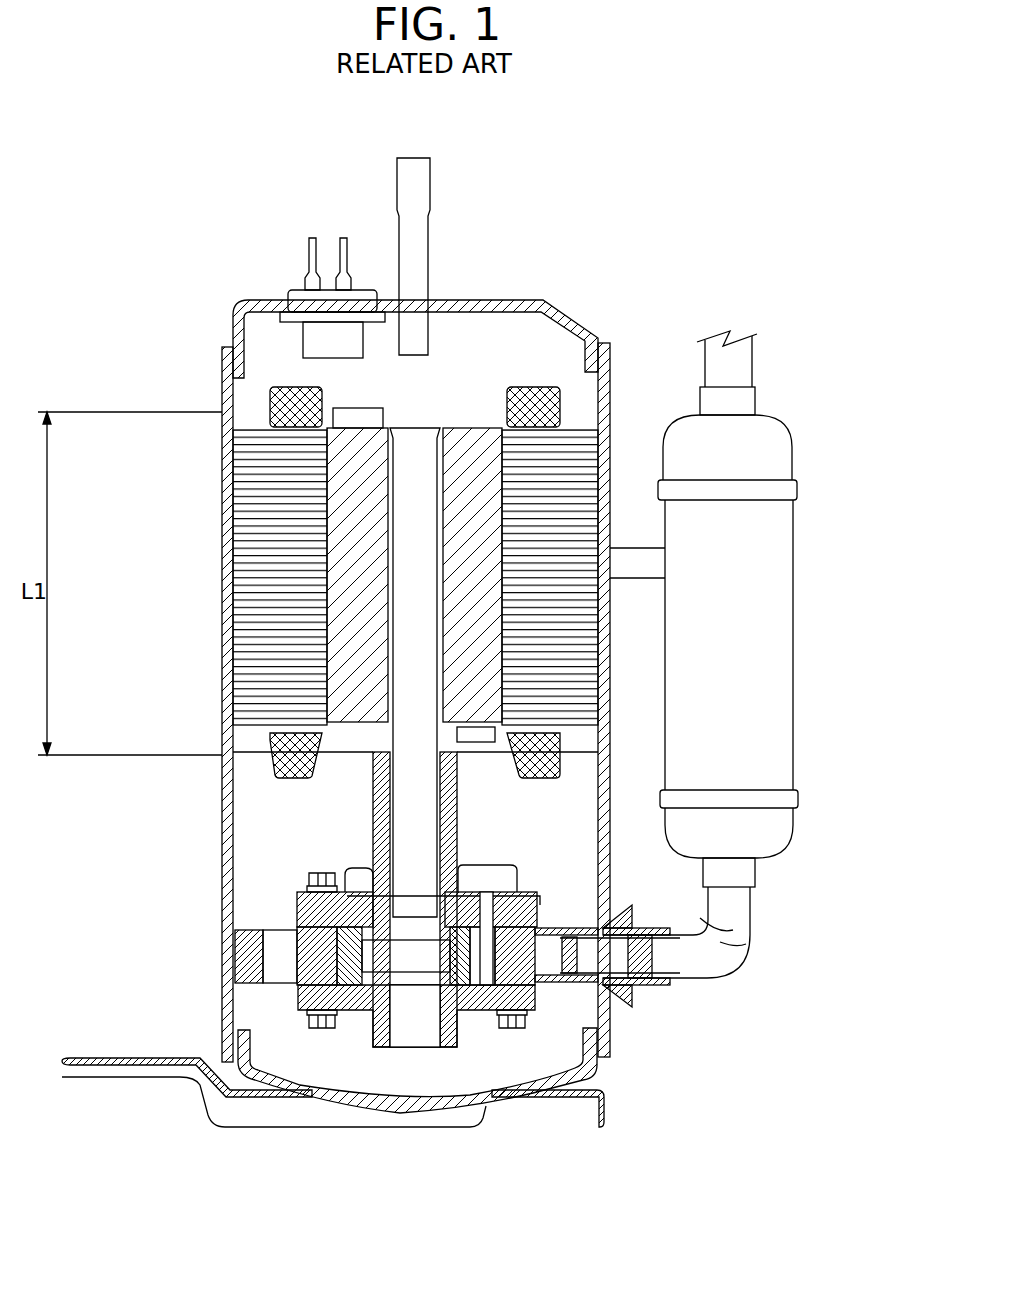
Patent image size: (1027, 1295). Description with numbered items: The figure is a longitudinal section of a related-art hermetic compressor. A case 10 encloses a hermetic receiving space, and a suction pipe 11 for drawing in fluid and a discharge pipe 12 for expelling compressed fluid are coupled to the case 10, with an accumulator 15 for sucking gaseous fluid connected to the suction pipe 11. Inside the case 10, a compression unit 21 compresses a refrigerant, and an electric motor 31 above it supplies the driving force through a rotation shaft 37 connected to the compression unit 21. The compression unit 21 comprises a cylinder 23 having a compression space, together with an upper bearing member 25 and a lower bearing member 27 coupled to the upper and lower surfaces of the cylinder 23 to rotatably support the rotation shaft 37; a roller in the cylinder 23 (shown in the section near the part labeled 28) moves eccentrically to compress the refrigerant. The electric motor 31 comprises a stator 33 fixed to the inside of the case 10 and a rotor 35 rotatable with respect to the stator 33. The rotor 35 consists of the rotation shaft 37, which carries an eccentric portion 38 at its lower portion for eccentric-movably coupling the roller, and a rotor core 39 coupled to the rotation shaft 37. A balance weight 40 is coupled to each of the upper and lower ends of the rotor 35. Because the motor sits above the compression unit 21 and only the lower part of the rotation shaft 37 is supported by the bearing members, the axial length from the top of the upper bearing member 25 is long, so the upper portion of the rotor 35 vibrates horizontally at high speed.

The case 10 is at (249, 308).
The suction pipe 11 is at (657, 980).
The discharge pipe 12 is at (427, 185).
The accumulator 15 is at (762, 638).
The compression unit 21 is at (130, 877).
The cylinder 23 is at (300, 941).
The upper bearing member 25 is at (311, 907).
The lower bearing member 27 is at (310, 1001).
The rolling piston 28 is at (330, 966).
The electric motor 31 is at (132, 452).
The stator 33 is at (260, 467).
The rotor 35 is at (358, 606).
The rotation shaft 37 is at (448, 465).
The eccentric portion 38 is at (385, 952).
The rotor core 39 is at (475, 453).
The balance weight 40 is at (375, 418).